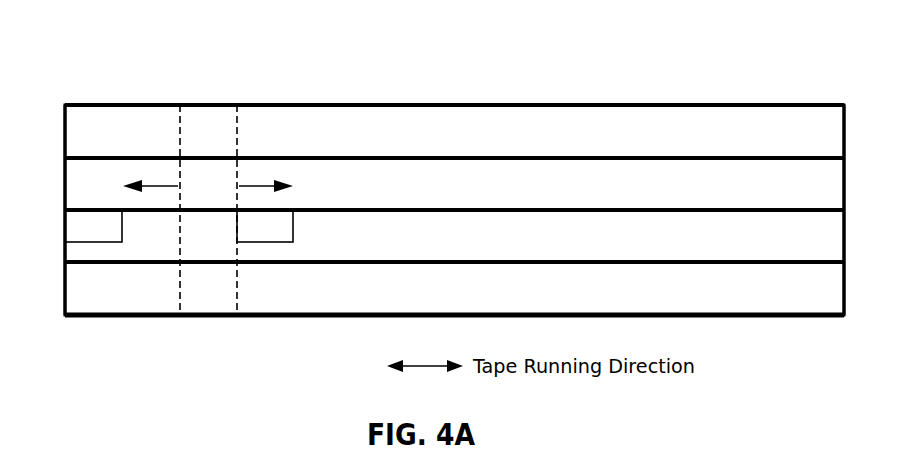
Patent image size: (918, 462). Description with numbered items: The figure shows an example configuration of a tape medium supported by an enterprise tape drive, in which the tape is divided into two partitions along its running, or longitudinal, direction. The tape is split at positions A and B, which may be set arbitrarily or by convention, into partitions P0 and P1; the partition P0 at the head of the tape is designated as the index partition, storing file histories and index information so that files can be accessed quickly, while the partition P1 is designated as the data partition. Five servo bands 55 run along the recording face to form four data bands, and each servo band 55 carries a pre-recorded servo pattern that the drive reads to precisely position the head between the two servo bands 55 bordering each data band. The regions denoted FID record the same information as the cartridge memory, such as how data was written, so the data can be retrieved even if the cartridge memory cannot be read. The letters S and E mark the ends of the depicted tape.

The servo band 55 is at (415, 315).
The FID region FID is at (179, 226).
The position A is at (177, 230).
The position B is at (236, 230).
The partition P0 is at (133, 186).
The partition P1 is at (289, 186).
The tape start S is at (63, 230).
The tape end E is at (838, 230).